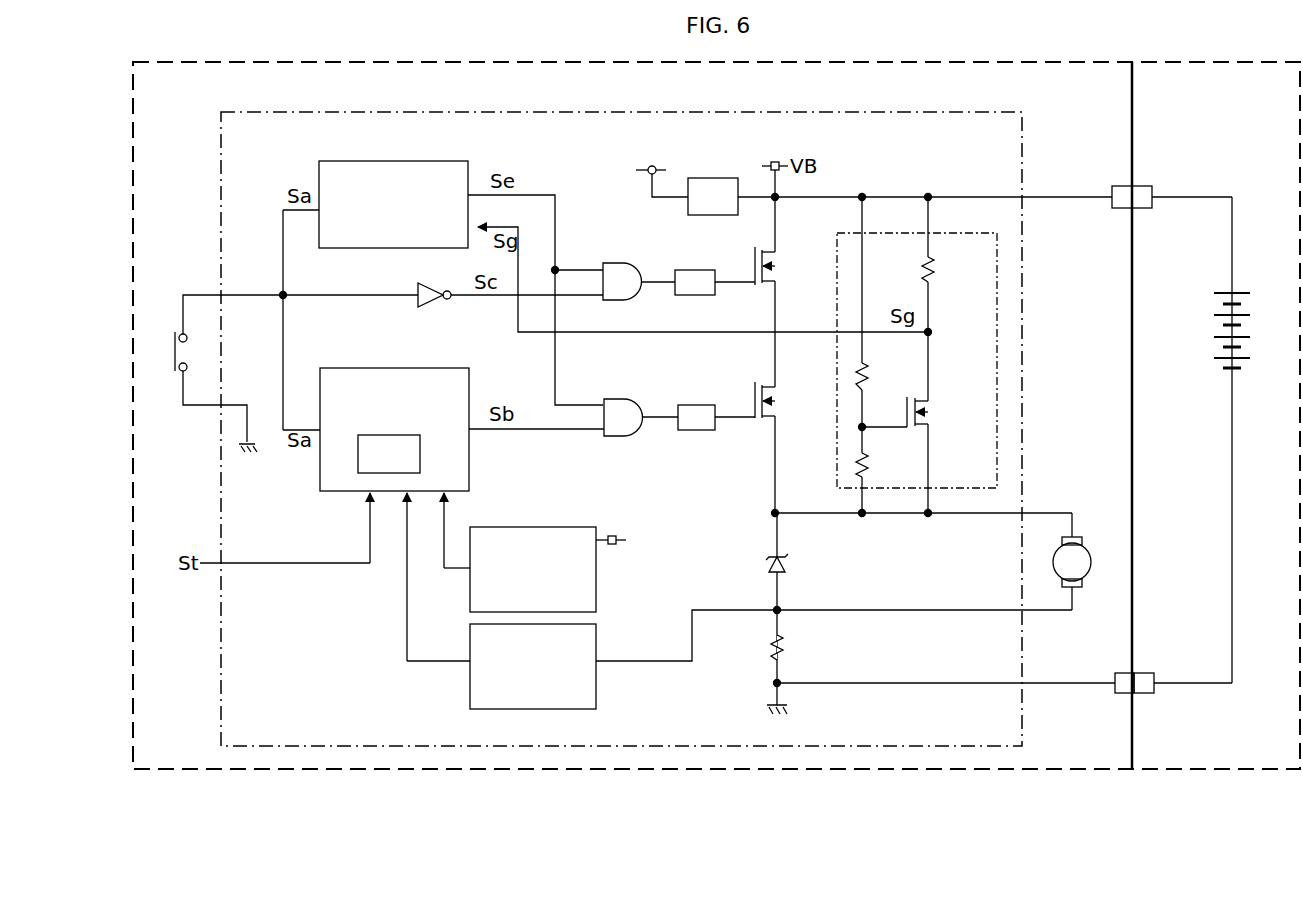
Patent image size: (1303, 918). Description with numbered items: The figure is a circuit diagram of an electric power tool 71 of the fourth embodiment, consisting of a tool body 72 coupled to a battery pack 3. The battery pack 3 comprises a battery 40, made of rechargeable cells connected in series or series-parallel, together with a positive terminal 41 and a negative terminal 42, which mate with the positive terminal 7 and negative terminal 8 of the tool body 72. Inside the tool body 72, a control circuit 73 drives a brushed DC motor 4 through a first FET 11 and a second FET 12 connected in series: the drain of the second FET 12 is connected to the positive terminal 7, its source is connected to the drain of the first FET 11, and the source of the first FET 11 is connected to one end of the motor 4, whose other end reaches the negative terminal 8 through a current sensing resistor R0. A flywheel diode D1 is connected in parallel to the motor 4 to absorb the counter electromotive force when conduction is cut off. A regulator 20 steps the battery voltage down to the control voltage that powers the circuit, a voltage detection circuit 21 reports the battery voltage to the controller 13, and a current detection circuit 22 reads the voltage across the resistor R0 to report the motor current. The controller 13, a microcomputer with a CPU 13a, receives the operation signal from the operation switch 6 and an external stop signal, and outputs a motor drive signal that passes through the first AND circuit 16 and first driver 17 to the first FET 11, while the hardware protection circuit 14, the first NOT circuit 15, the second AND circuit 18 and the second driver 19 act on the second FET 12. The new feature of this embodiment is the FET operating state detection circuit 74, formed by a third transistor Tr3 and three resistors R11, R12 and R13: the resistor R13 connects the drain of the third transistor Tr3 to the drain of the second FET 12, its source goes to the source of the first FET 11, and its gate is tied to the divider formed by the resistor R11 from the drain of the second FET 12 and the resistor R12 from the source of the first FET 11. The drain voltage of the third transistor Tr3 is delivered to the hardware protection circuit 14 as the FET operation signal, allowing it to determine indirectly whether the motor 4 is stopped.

The electric power tool 71 is at (167, 54).
The tool body 72 is at (848, 61).
The battery pack 3 is at (1228, 61).
The control circuit 73 is at (1022, 142).
The FET operating state detection circuit 74 is at (973, 233).
The hardware protection circuit 14 is at (412, 161).
The controller 13 is at (338, 368).
The CPU 13a is at (420, 452).
The first NOT circuit 15 is at (433, 308).
The first AND circuit 16 is at (623, 399).
The first driver 17 is at (698, 405).
The second AND circuit 18 is at (623, 263).
The second driver 19 is at (698, 270).
The regulator 20 is at (711, 178).
The voltage detection circuit 21 is at (509, 527).
The current detection circuit 22 is at (511, 709).
The operation switch 6 is at (174, 352).
The second FET 12 is at (774, 267).
The first FET 11 is at (774, 401).
The motor 4 is at (1088, 547).
The positive terminal 7 is at (1118, 186).
The negative terminal 8 is at (1120, 673).
The positive terminal 41 is at (1145, 186).
The negative terminal 42 is at (1149, 673).
The battery 40 is at (1249, 308).
The resistor R11 is at (870, 386).
The resistor R12 is at (872, 469).
The resistor R13 is at (934, 277).
The third transistor Tr3 is at (927, 409).
The diode D1 is at (781, 569).
The current sensing resistor R0 is at (782, 652).